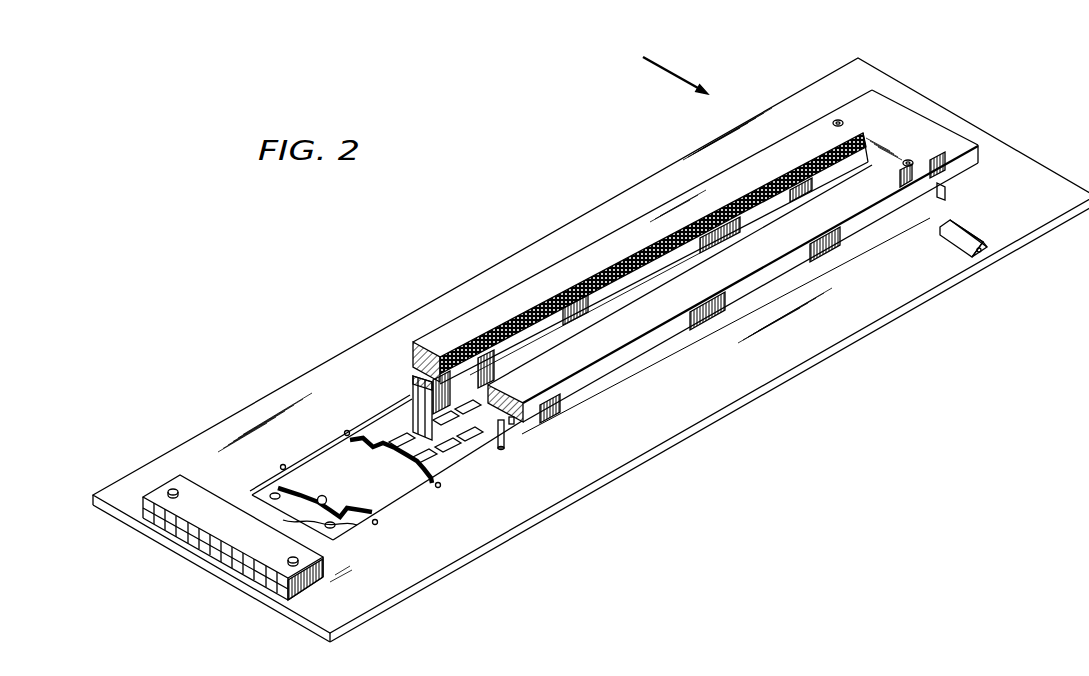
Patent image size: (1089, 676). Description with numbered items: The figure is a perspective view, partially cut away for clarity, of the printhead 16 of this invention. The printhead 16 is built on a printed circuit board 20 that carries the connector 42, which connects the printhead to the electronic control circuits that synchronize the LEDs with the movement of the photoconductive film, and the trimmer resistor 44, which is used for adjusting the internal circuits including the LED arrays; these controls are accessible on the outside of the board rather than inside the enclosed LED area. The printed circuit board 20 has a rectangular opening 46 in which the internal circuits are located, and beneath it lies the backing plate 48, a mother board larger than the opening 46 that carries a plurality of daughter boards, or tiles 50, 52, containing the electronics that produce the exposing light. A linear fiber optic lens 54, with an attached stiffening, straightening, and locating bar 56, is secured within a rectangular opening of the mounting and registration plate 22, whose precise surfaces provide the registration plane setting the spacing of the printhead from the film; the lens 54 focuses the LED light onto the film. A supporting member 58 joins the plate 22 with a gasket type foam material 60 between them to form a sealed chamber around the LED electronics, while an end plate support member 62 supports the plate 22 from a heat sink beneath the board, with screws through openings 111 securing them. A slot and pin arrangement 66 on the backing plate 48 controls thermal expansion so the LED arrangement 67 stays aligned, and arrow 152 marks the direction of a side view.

The printhead 16 is at (897, 396).
The printed circuit board 20 is at (690, 398).
The mounting and registration plate 22 is at (900, 108).
The connector 42 is at (233, 537).
The trimmer resistor 44 is at (962, 235).
The rectangular opening 46 is at (358, 525).
The backing plate 48 is at (387, 490).
The tile 50 is at (370, 432).
The tile 52 is at (402, 417).
The linear fiber optic lens 54 is at (603, 270).
The stiffening, straightening, and locating bar 56 is at (467, 382).
The supporting member 58 is at (555, 418).
The gasket type foam material 60 is at (512, 422).
The end plate support member 62 is at (950, 188).
The slot and pin arrangement 66 is at (322, 497).
The LED arrangement 67 is at (438, 487).
The openings 111 is at (275, 503).
The arrow 152 is at (677, 80).